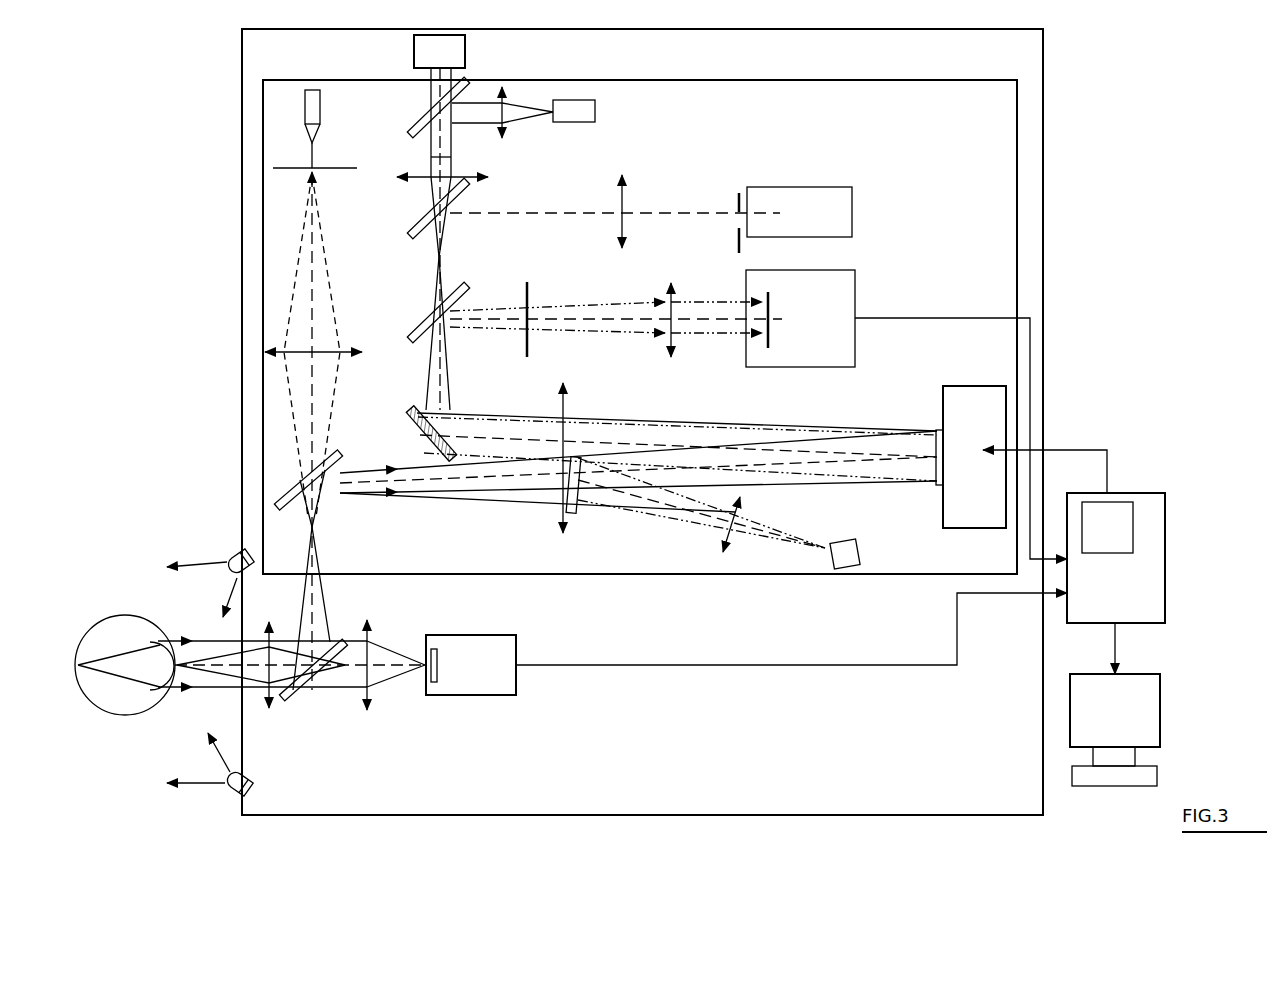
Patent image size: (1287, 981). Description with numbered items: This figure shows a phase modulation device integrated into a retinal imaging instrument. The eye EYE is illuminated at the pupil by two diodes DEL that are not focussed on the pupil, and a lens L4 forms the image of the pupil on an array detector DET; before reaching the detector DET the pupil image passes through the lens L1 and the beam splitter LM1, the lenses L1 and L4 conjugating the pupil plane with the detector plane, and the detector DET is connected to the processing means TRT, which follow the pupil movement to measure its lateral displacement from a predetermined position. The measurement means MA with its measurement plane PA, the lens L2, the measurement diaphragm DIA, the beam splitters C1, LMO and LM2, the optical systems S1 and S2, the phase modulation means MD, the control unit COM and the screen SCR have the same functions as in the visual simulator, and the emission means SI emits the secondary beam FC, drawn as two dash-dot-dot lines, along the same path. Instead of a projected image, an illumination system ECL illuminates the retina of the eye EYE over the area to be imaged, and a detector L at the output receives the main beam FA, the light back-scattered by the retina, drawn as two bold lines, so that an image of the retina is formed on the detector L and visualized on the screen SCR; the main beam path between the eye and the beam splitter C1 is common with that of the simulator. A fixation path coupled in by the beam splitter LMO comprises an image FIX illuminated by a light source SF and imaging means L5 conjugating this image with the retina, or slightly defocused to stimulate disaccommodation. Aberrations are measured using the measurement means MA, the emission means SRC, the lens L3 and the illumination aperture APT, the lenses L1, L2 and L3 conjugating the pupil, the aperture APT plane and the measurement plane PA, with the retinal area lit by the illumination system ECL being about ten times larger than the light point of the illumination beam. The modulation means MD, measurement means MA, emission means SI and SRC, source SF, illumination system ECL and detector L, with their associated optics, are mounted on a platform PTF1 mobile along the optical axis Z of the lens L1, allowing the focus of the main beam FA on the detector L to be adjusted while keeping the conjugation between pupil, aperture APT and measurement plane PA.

The platform PTF1 is at (995, 138).
The detector L is at (414, 46).
The main beam FA is at (450, 147).
The beam splitter C1 is at (417, 343).
The illumination system ECL is at (598, 114).
The optical axis Z is at (536, 212).
The lens L3 is at (628, 188).
The illumination aperture APT is at (740, 222).
The means of emission SRC is at (853, 204).
The measurement means MA is at (855, 347).
The measurement plane PA is at (772, 295).
The lens L2 is at (668, 300).
The measurement diaphragm DIA is at (527, 290).
The secondary beam FC is at (598, 308).
The light source SF is at (320, 110).
The image FIX is at (357, 167).
The imaging means L5 is at (338, 360).
The beam splitter LMO is at (345, 460).
The optical system S1 is at (572, 398).
The beam splitter LM2 is at (574, 520).
The optical system S2 is at (736, 536).
The means of emission SI is at (858, 552).
The phase modulation means MD is at (976, 396).
The processing means TRT is at (1147, 502).
The control unit COM is at (1096, 506).
The screen SCR is at (1146, 714).
The eye EYE is at (108, 697).
The lens L1 is at (264, 675).
The beam splitter LM1 is at (292, 700).
The lens L4 is at (368, 700).
The array detector DET is at (437, 683).
The diodes DEL is at (240, 556).